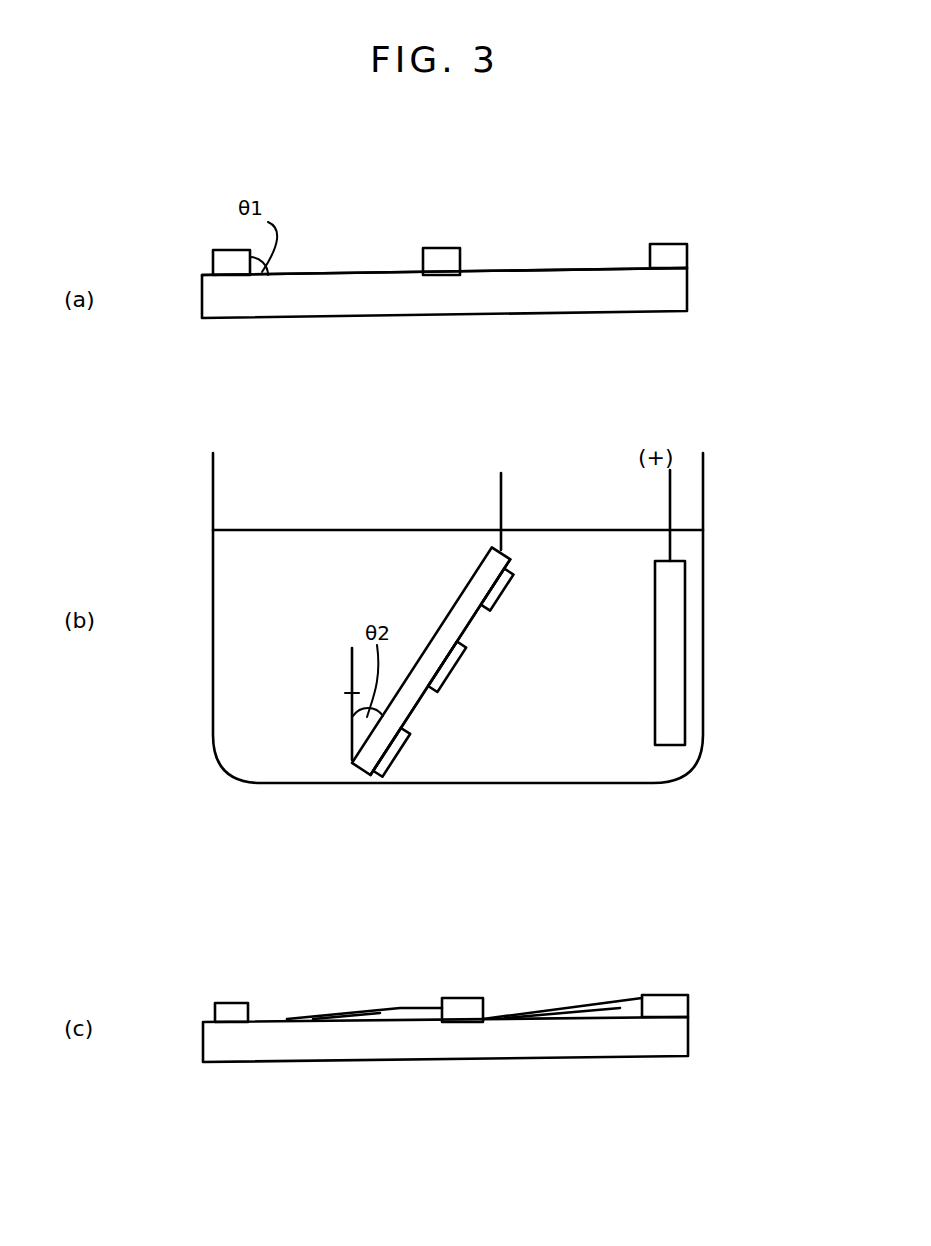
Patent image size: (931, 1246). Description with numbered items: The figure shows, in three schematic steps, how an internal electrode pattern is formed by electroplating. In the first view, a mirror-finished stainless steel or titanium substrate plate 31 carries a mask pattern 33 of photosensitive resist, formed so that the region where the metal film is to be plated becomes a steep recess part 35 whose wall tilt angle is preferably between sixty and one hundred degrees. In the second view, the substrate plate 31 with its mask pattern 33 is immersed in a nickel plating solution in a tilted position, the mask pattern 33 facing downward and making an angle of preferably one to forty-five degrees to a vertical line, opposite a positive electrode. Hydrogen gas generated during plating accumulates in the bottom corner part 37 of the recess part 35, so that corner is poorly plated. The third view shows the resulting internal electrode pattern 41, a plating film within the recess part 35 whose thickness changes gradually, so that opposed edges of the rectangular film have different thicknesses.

The substrate plate 31 is at (482, 573).
The mask pattern 33 is at (455, 257).
The recess part 35 is at (333, 270).
The bottom corner part 37 is at (427, 693).
The internal electrode pattern 41 is at (663, 297).